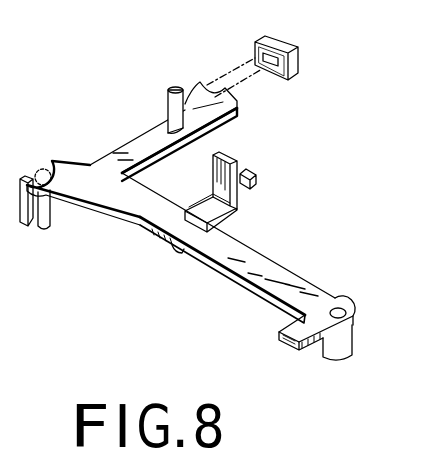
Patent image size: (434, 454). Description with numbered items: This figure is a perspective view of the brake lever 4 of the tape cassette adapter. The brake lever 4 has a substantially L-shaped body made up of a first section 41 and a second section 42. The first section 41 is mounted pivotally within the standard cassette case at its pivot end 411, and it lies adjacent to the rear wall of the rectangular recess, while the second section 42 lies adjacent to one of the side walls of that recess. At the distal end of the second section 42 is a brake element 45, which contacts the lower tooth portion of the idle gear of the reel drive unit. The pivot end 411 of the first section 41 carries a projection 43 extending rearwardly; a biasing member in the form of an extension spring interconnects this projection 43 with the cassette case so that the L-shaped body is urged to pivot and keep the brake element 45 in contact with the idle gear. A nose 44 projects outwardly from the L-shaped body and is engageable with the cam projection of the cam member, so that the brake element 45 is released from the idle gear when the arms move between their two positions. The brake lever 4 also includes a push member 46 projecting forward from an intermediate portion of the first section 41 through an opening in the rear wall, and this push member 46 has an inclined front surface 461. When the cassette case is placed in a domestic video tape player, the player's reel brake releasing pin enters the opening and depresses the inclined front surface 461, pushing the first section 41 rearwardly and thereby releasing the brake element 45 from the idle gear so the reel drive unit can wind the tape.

The brake lever 4 is at (200, 215).
The first section 41 is at (251, 289).
The pivot end 411 is at (341, 307).
The second section 42 is at (138, 143).
The projection 43 is at (318, 343).
The nose 44 is at (45, 160).
The brake element 45 is at (254, 50).
The push member 46 is at (255, 178).
The inclined front surface 461 is at (250, 173).